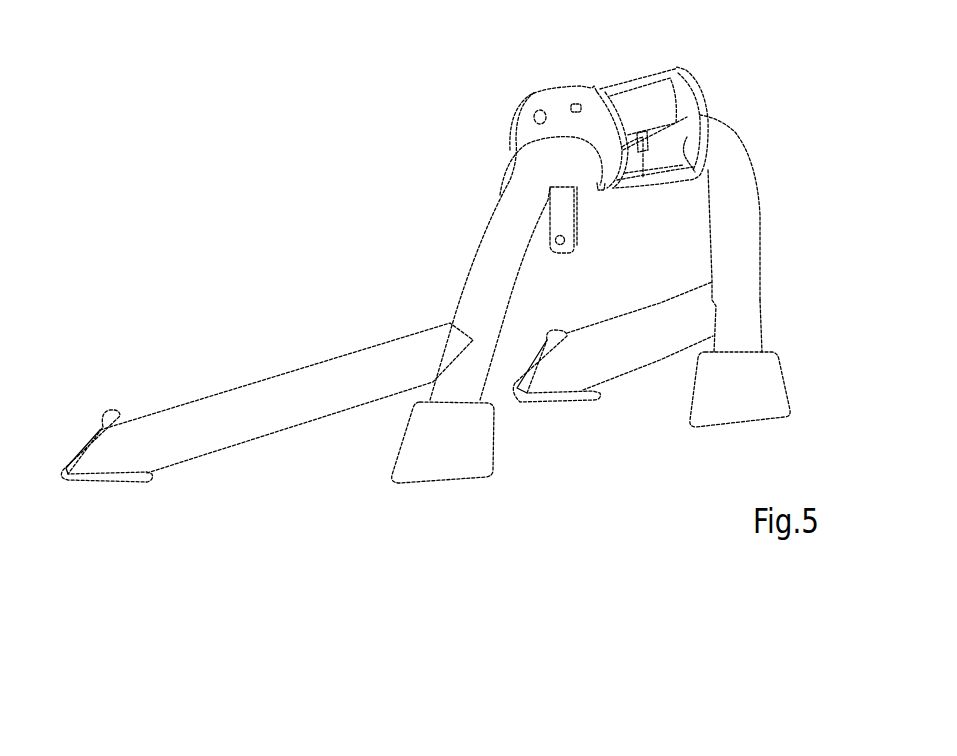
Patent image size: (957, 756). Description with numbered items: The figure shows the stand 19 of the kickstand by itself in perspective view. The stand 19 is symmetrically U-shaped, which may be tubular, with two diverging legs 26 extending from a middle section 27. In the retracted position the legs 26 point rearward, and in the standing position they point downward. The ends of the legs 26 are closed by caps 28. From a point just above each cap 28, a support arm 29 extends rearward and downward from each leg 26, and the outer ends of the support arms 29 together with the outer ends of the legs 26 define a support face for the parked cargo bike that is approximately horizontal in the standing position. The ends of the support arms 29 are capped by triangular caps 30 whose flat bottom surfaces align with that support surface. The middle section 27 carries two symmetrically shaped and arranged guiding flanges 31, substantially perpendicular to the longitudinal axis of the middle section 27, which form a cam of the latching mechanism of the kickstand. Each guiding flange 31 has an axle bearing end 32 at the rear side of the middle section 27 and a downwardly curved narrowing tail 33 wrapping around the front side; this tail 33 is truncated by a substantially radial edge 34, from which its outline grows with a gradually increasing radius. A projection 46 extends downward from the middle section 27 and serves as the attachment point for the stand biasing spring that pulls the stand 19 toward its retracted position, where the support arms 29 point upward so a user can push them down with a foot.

The stand 19 is at (248, 165).
The legs 26 is at (475, 281).
The middle section 27 is at (663, 160).
The caps 28 is at (404, 455).
The support arms 29 is at (223, 417).
The triangular caps 30 is at (87, 425).
The guiding flanges 31 is at (655, 69).
The axle bearing end 32 is at (516, 127).
The narrowing tail 33 is at (615, 153).
The radial edge 34 is at (599, 184).
The projection 46 is at (550, 245).